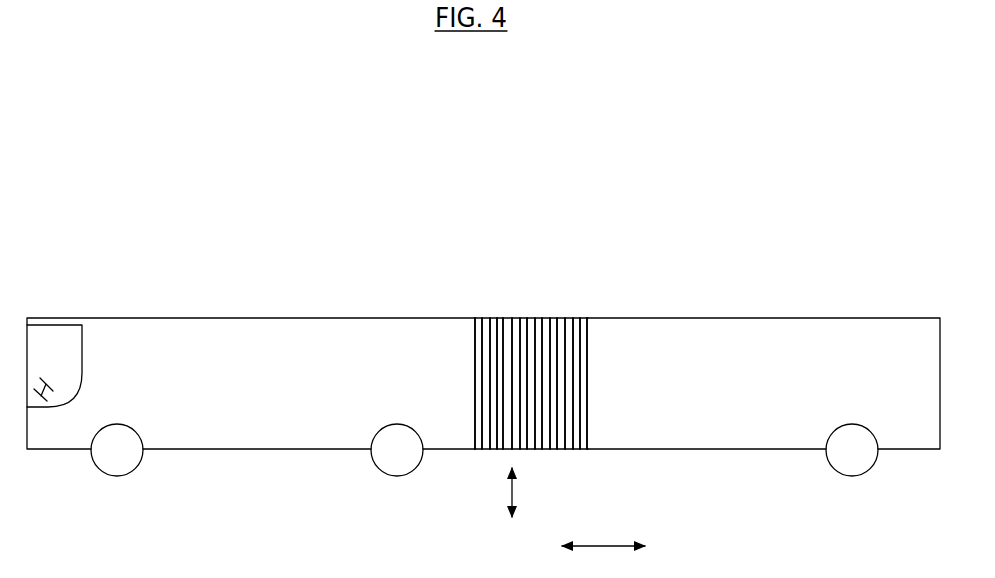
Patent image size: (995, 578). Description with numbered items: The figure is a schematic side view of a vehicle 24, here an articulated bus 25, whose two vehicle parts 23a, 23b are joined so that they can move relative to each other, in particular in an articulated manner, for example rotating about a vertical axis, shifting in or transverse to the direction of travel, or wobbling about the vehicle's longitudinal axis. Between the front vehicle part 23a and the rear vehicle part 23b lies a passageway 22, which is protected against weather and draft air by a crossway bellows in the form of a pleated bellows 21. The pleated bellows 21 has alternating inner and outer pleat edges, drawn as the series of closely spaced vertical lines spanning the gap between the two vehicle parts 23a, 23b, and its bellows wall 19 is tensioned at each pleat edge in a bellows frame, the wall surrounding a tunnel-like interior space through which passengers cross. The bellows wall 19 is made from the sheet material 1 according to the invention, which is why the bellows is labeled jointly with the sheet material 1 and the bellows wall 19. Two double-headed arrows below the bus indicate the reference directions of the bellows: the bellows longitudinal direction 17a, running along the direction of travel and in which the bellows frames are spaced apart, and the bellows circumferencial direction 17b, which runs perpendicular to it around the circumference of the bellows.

The vehicle 24 is at (193, 212).
The articulated bus 25 is at (483, 329).
The vehicle part 23a is at (153, 335).
The vehicle part 23b is at (733, 340).
The sheet material 1 is at (508, 343).
The bellows wall 19 is at (536, 315).
The passageway 22 is at (532, 270).
The pleated bellows 21 is at (528, 362).
The bellows longitudinal direction 17a is at (603, 534).
The bellows circumferencial direction 17b is at (530, 492).